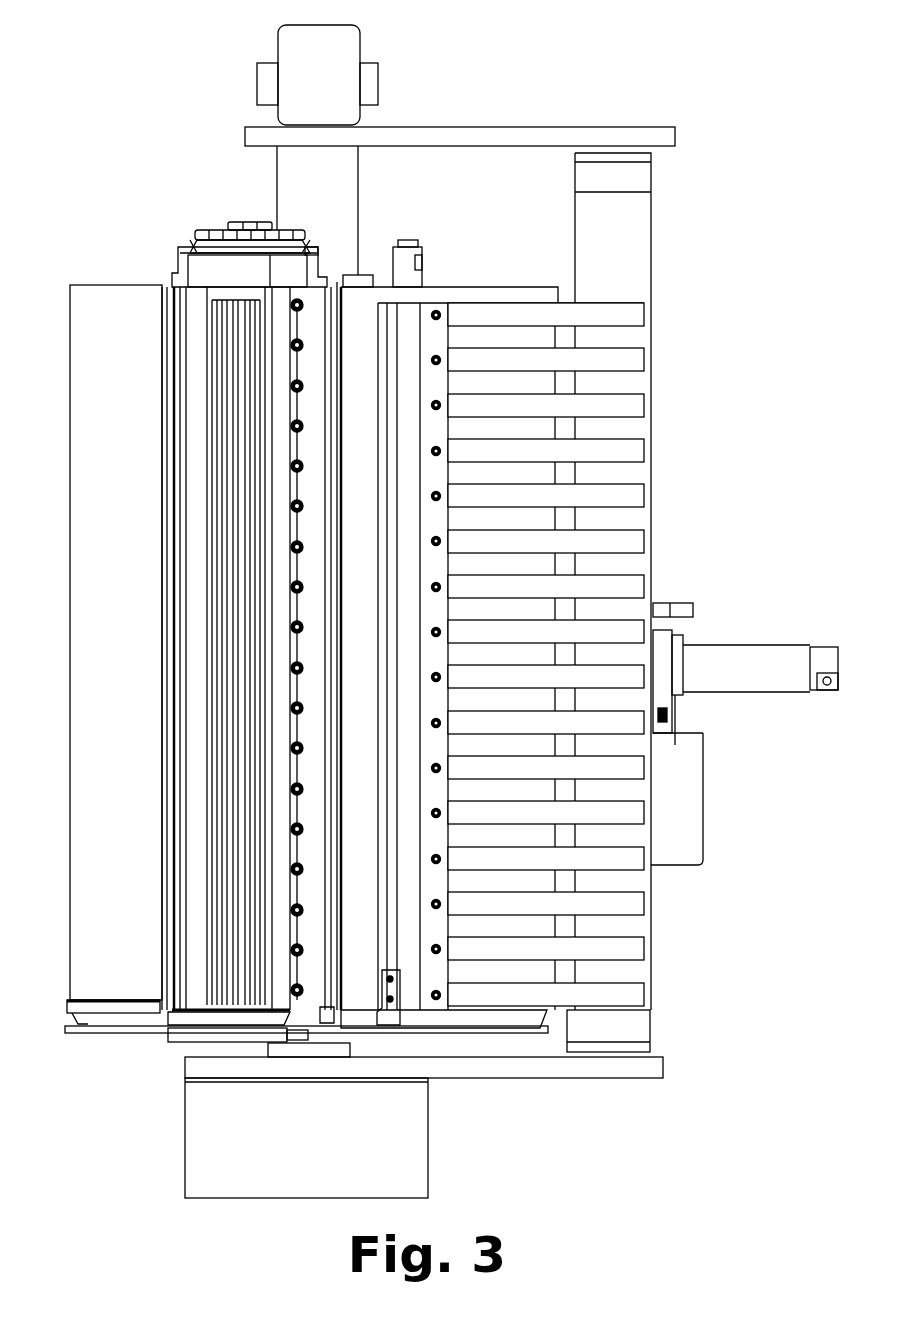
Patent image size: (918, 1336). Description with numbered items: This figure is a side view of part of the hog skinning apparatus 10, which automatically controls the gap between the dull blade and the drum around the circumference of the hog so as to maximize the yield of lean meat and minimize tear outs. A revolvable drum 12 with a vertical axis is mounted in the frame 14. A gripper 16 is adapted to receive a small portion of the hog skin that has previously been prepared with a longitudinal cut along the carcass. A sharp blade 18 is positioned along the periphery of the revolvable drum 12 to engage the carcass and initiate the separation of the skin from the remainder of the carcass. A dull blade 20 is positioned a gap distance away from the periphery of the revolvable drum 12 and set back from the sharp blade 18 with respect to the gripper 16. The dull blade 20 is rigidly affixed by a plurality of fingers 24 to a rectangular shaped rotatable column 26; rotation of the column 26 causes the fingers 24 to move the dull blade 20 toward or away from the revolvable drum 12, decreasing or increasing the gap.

The hog skinning apparatus 10 is at (103, 128).
The revolvable drum 12 is at (90, 381).
The frame 14 is at (287, 172).
The gripper 16 is at (195, 232).
The sharp blade 18 is at (333, 288).
The dull blade 20 is at (385, 320).
The fingers 24 is at (637, 407).
The rotatable column 26 is at (635, 232).